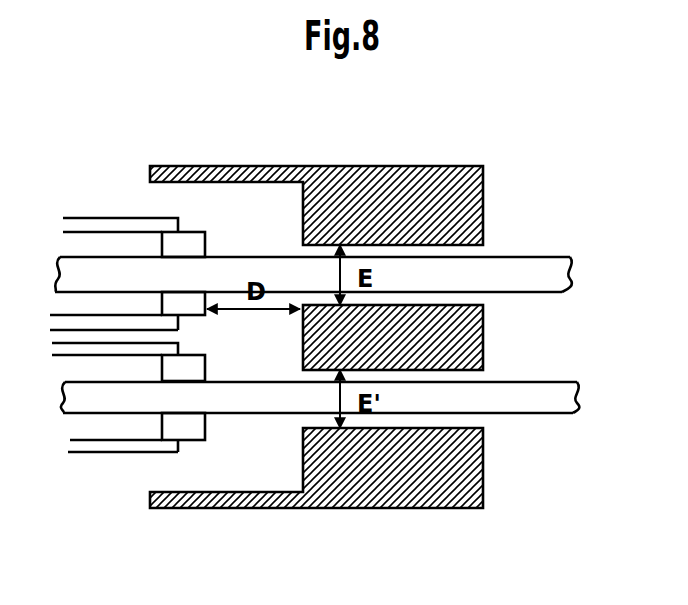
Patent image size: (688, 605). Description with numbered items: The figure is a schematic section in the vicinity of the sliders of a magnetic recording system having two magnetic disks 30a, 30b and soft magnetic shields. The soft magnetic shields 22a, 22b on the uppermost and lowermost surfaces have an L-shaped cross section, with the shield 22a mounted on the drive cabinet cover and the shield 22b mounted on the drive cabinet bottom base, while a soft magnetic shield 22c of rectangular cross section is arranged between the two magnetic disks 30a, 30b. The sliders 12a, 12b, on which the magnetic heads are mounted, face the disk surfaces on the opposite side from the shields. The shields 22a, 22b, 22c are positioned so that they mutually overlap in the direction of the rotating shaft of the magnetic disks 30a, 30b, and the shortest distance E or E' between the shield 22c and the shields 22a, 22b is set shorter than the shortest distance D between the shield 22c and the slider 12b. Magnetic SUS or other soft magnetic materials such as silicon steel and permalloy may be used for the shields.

The slider 12a is at (187, 242).
The slider 12b is at (193, 308).
The soft magnetic shield 22a is at (440, 178).
The soft magnetic shield 22b is at (440, 505).
The soft magnetic shield 22c is at (483, 352).
The magnetic disk 30a is at (525, 273).
The magnetic disk 30b is at (535, 403).